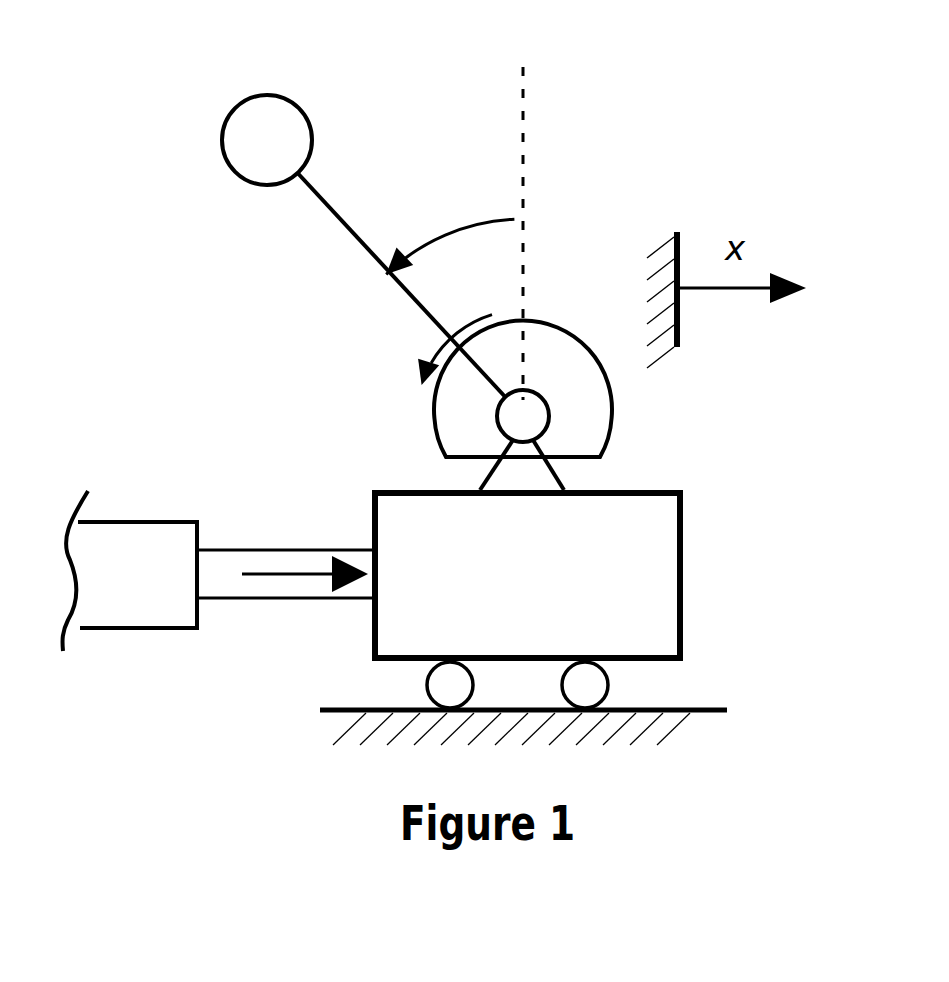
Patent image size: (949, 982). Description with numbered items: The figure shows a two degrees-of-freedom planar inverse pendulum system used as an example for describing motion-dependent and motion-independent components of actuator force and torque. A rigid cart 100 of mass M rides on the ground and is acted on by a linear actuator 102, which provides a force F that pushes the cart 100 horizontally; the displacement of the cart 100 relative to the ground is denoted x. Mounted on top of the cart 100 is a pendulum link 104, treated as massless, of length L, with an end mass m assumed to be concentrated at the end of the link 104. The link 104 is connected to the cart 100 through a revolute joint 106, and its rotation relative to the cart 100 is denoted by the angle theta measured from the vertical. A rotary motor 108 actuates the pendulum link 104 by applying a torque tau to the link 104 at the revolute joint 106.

The rigid cart 100 is at (683, 577).
The linear actuator 102 is at (137, 522).
The pendulum link element 104 is at (327, 205).
The revolute joint 106 is at (550, 430).
The rotary motor 108 is at (560, 345).